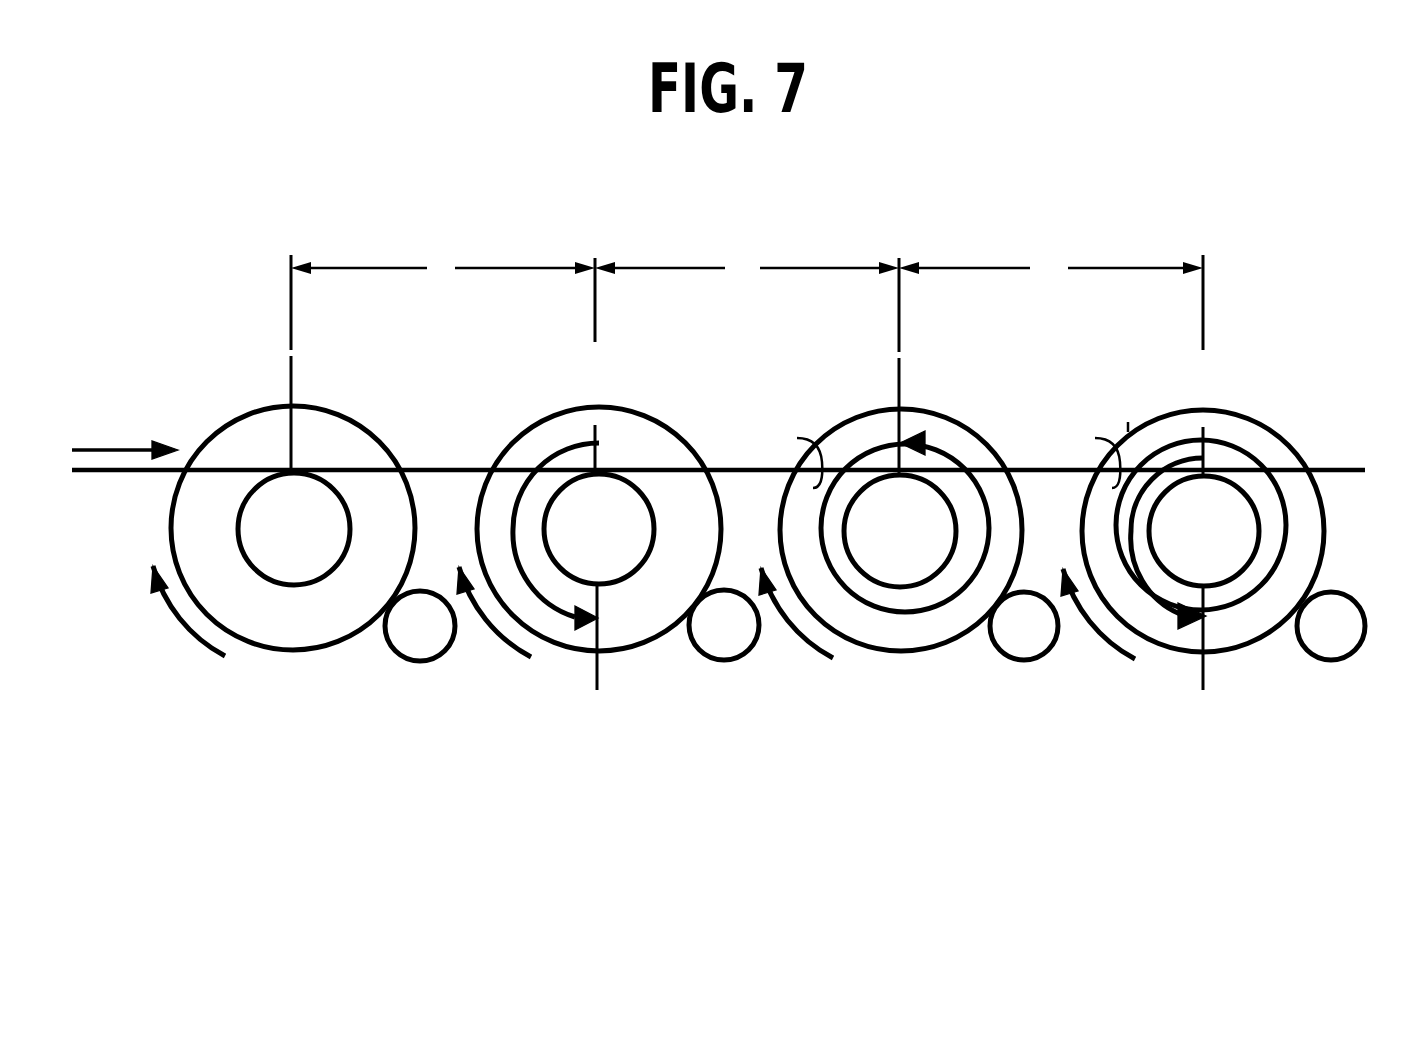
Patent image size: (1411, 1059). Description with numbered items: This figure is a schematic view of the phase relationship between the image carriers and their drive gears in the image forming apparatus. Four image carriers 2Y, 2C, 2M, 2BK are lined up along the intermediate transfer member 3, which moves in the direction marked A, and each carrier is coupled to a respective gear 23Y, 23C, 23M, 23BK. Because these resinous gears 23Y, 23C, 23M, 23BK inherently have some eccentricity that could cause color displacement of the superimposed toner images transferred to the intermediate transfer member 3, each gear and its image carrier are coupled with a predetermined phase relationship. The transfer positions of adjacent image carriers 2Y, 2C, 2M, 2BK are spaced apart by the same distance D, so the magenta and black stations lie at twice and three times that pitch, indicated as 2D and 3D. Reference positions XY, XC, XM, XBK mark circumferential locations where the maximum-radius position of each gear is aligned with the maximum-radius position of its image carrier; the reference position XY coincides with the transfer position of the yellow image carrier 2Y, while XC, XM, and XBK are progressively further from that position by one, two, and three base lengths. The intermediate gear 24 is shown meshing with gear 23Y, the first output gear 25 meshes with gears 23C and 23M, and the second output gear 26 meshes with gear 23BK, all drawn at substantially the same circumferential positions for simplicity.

The image carrier 2Y is at (233, 485).
The image carrier 2C is at (663, 485).
The image carrier 2M is at (963, 485).
The image carrier 2BK is at (1264, 485).
The gear 23Y is at (296, 655).
The gear 23C is at (643, 652).
The gear 23M is at (902, 655).
The gear 23BK is at (1247, 652).
The intermediate gear 24 is at (420, 662).
The first output gear 25 is at (732, 663).
The second output gear 26 is at (1342, 663).
The intermediate transfer member 3 is at (1333, 470).
The reference position XY is at (294, 372).
The reference position XC is at (596, 673).
The reference position XM is at (892, 375).
The reference position XBK is at (1201, 673).
The distance D is at (505, 480).
The distance 2D from reference 2D is at (791, 450).
The distance 3D from reference 3D is at (1092, 450).
The belt moving direction A is at (125, 437).